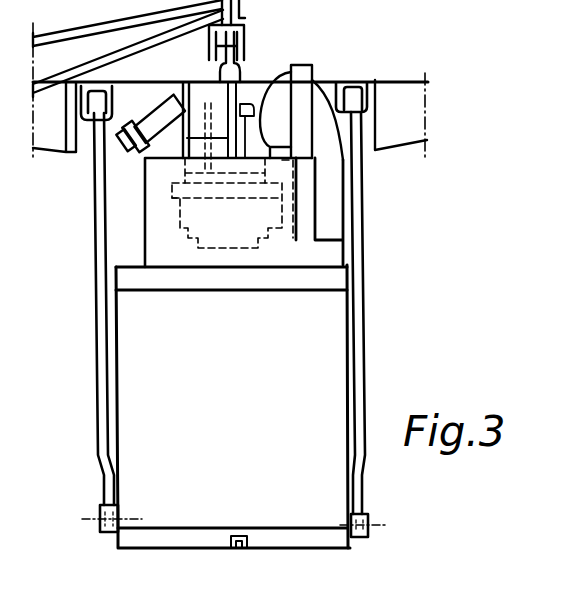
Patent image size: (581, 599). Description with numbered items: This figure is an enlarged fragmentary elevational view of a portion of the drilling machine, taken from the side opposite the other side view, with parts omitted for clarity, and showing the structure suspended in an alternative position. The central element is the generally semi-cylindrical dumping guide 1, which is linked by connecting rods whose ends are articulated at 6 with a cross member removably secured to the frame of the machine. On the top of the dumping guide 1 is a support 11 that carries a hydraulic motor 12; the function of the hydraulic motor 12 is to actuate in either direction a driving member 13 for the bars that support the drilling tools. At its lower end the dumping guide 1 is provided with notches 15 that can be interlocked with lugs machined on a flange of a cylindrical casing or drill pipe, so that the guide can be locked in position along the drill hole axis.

The dumping guide 1 is at (233, 406).
The articulation 6 is at (92, 259).
The support 11 is at (311, 254).
The hydraulic motor 12 is at (301, 78).
The driving member 13 is at (260, 186).
The notches 15 is at (241, 548).